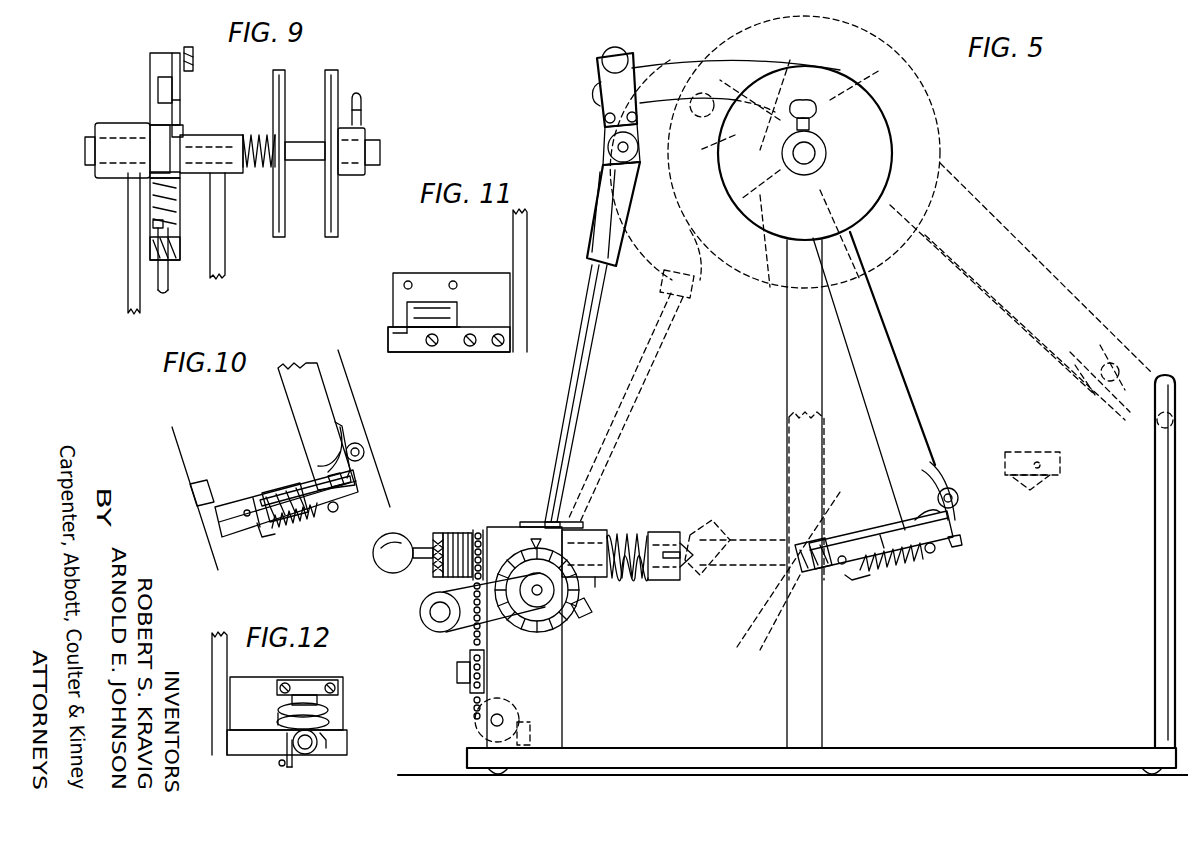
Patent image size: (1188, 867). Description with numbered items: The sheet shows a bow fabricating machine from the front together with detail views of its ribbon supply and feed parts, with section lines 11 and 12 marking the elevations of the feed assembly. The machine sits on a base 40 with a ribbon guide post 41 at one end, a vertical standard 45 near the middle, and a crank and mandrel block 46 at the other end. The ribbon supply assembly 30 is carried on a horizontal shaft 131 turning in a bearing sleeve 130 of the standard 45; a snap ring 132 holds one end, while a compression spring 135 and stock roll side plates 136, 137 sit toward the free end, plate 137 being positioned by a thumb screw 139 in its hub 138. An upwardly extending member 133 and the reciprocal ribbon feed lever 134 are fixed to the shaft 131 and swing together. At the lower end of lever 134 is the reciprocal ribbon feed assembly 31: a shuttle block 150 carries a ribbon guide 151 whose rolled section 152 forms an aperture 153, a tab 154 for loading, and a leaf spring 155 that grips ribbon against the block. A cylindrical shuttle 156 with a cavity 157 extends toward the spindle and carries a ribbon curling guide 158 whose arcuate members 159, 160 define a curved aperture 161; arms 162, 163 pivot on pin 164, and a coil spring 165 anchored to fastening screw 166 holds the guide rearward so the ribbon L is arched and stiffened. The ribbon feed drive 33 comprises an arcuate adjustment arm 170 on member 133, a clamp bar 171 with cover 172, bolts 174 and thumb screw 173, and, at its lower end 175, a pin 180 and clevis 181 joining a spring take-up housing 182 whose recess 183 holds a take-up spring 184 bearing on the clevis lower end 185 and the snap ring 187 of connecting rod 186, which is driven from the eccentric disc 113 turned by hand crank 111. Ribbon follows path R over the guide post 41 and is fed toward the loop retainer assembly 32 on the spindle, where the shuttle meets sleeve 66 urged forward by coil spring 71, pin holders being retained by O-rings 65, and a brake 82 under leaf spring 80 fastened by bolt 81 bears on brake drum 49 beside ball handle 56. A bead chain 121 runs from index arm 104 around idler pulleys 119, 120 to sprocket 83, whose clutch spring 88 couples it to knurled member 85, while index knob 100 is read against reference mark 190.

In FIG. 9, the ribbon supply assembly 30 is at (355, 90).
In FIG. 5, the ribbon supply assembly 30 is at (893, 148).
In FIG. 5, the reciprocal ribbon feed assembly 31 is at (893, 576).
In FIG. 5, the loop retainer assembly 32 is at (670, 530).
In FIG. 9, the ribbon feed drive 33 is at (122, 213).
In FIG. 5, the ribbon feed drive 33 is at (676, 258).
In FIG. 5, the base 40 is at (711, 755).
In FIG. 5, the ribbon guide post 41 is at (1153, 598).
In FIG. 9, the vertical standard 45 is at (128, 287).
In FIG. 5, the vertical standard 45 is at (823, 684).
In FIG. 5, the crank and mandrel block 46 is at (534, 672).
In FIG. 5, the brake drum 49 is at (601, 590).
In FIG. 5, the ball handle 56 is at (384, 560).
In FIG. 5, the elastic O-rings 65 is at (635, 538).
In FIG. 5, the sleeve 66 is at (665, 580).
In FIG. 5, the coil spring 71 is at (632, 578).
In FIG. 5, the leaf spring 80 is at (580, 520).
In FIG. 5, the bolt 81 is at (534, 521).
In FIG. 5, the brake 82 is at (585, 529).
In FIG. 5, the sprocket 83 is at (481, 532).
In FIG. 5, the knurled member 85 is at (437, 535).
In FIG. 5, the clutch spring 88 is at (456, 533).
In FIG. 5, the index knob 100 is at (562, 608).
In FIG. 5, the index arm 104 is at (584, 606).
In FIG. 5, the hand crank 111 is at (482, 602).
In FIG. 5, the eccentric disc 113 is at (552, 606).
In FIG. 5, the idler pulley 119 is at (476, 725).
In FIG. 5, the second idler pulley 120 is at (470, 690).
In FIG. 5, the bead chain 121 is at (474, 642).
In FIG. 9, the bearing sleeve 130 is at (122, 126).
In FIG. 9, the horizontal shaft 131 is at (85, 151).
In FIG. 9, the snap ring 132 is at (96, 130).
In FIG. 5, the upwardly extending member 133 is at (800, 60).
In FIG. 9, the reciprocal ribbon feed lever 134 is at (222, 245).
In FIG. 11, the reciprocal ribbon feed lever 134 is at (513, 238).
In FIG. 10, the reciprocal ribbon feed lever 134 is at (300, 402).
In FIG. 12, the reciprocal ribbon feed lever 134 is at (218, 650).
In FIG. 5, the reciprocal ribbon feed lever 134 is at (884, 350).
In FIG. 9, the compression spring 135 is at (255, 132).
In FIG. 9, the stock roll side plate 136 is at (282, 74).
In FIG. 9, the stock roll side plate 137 is at (335, 72).
In FIG. 5, the stock roll side plate 137 is at (878, 144).
In FIG. 9, the hub 138 is at (352, 176).
In FIG. 5, the hub 138 is at (790, 168).
In FIG. 9, the thumb screw 139 is at (362, 104).
In FIG. 5, the thumb screw 139 is at (815, 107).
In FIG. 11, the shuttle block 150 is at (445, 352).
In FIG. 10, the shuttle block 150 is at (340, 490).
In FIG. 12, the shuttle block 150 is at (230, 748).
In FIG. 5, the shuttle block 150 is at (955, 542).
In FIG. 11, the ribbon guide 151 is at (498, 298).
In FIG. 10, the ribbon guide 151 is at (342, 428).
In FIG. 12, the ribbon guide 151 is at (262, 675).
In FIG. 5, the ribbon guide 151 is at (938, 470).
In FIG. 11, the rolled section 152 is at (430, 302).
In FIG. 10, the rolled section 152 is at (365, 450).
In FIG. 5, the rolled section 152 is at (958, 495).
In FIG. 11, the aperture 153 is at (418, 352).
In FIG. 11, the tab 154 is at (398, 325).
In FIG. 10, the tab 154 is at (358, 476).
In FIG. 5, the tab 154 is at (955, 525).
In FIG. 10, the leaf spring 155 is at (332, 462).
In FIG. 12, the leaf spring 155 is at (305, 700).
In FIG. 5, the leaf spring 155 is at (930, 512).
In FIG. 10, the shuttle 156 is at (285, 495).
In FIG. 12, the shuttle 156 is at (305, 754).
In FIG. 5, the shuttle 156 is at (887, 528).
In FIG. 10, the cavity 157 is at (222, 527).
In FIG. 10, the ribbon curling guide 158 is at (257, 500).
In FIG. 12, the ribbon curling guide 158 is at (329, 720).
In FIG. 5, the ribbon curling guide 158 is at (825, 565).
In FIG. 10, the arcuate member 159 is at (198, 498).
In FIG. 12, the arcuate member 159 is at (322, 708).
In FIG. 10, the arcuate member 160 is at (215, 514).
In FIG. 12, the arcuate member 160 is at (327, 738).
In FIG. 10, the curved aperture 161 is at (226, 492).
In FIG. 12, the curved aperture 161 is at (280, 717).
In FIG. 10, the arm 162 is at (268, 540).
In FIG. 12, the arm 162 is at (287, 768).
In FIG. 5, the arm 162 is at (862, 577).
In FIG. 12, the arm 163 is at (327, 752).
In FIG. 5, the arm 163 is at (840, 550).
In FIG. 10, the pin 164 is at (250, 520).
In FIG. 12, the pin 164 is at (287, 748).
In FIG. 10, the coil spring 165 is at (300, 524).
In FIG. 5, the coil spring 165 is at (895, 566).
In FIG. 10, the fastening screw 166 is at (334, 512).
In FIG. 5, the fastening screw 166 is at (935, 553).
In FIG. 9, the arcuate adjustment arm 170 is at (158, 89).
In FIG. 5, the arcuate adjustment arm 170 is at (668, 70).
In FIG. 9, the clamp bar 171 is at (158, 68).
In FIG. 9, the clamp bar cover 172 is at (181, 96).
In FIG. 5, the clamp bar cover 172 is at (602, 78).
In FIG. 9, the thumb screw 173 is at (193, 58).
In FIG. 5, the bolts 174 is at (631, 112).
In FIG. 9, the lower end of clamp bar 175 is at (184, 130).
In FIG. 5, the lower end of clamp bar 175 is at (608, 138).
In FIG. 5, the pin 180 is at (618, 147).
In FIG. 9, the clevis 181 is at (150, 166).
In FIG. 5, the clevis 181 is at (612, 152).
In FIG. 9, the spring take-up housing 182 is at (174, 192).
In FIG. 5, the spring take-up housing 182 is at (595, 225).
In FIG. 9, the recess 183 is at (174, 204).
In FIG. 9, the take-up spring 184 is at (174, 216).
In FIG. 9, the lower end of clevis 185 is at (174, 180).
In FIG. 9, the connecting rod 186 is at (168, 282).
In FIG. 5, the connecting rod 186 is at (590, 333).
In FIG. 9, the snap ring 187 is at (153, 228).
In FIG. 5, the reference mark 190 is at (529, 542).
In FIG. 10, the section line 11 is at (338, 347).
In FIG. 10, the section line 12 is at (168, 433).
In FIG. 5, the ribbon path R is at (1030, 247).
In FIG. 5, the length of strip material L is at (760, 618).